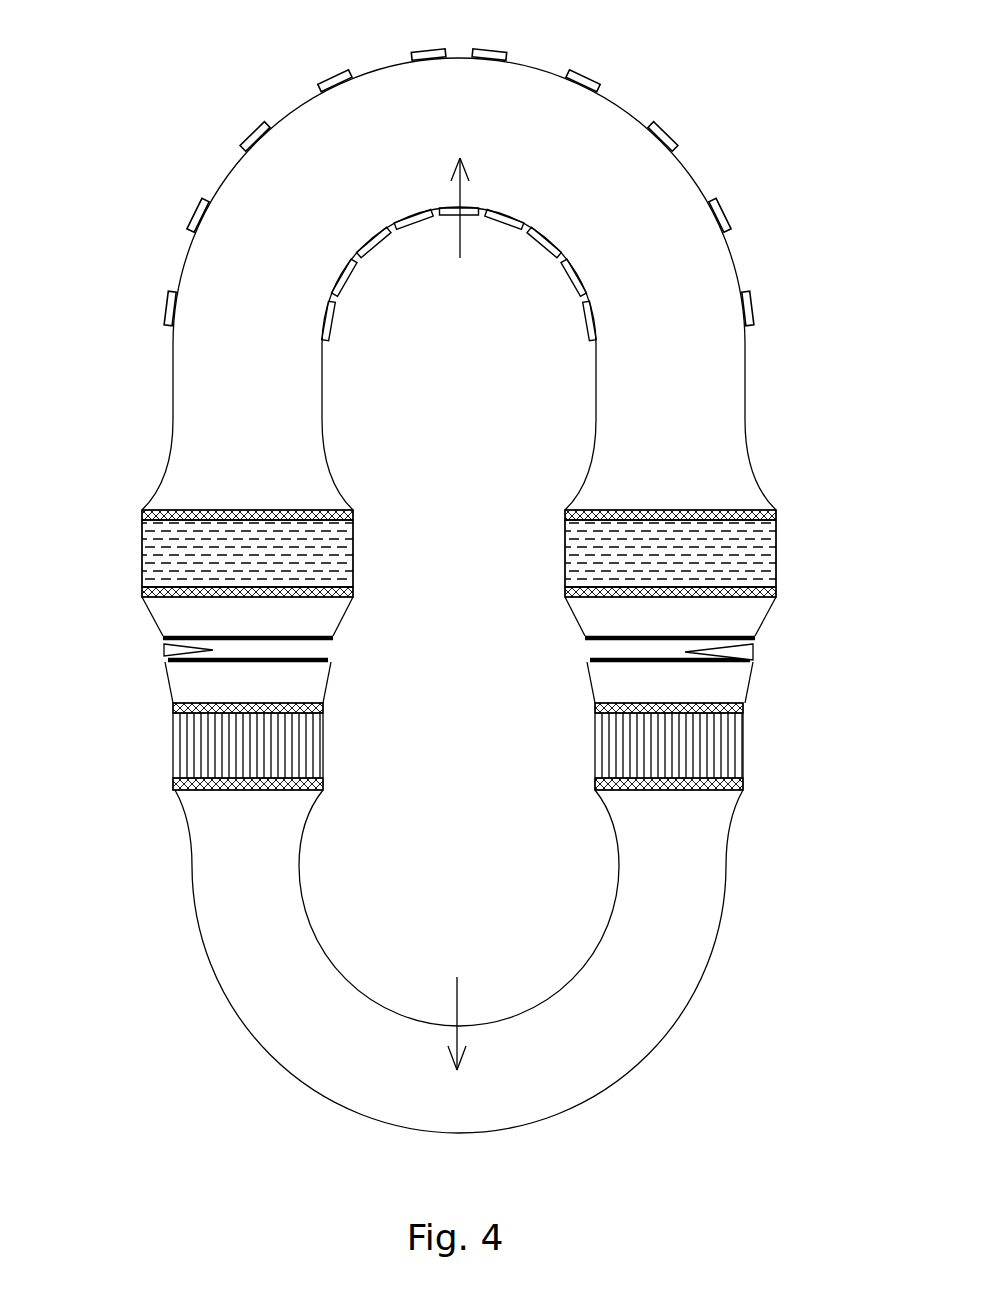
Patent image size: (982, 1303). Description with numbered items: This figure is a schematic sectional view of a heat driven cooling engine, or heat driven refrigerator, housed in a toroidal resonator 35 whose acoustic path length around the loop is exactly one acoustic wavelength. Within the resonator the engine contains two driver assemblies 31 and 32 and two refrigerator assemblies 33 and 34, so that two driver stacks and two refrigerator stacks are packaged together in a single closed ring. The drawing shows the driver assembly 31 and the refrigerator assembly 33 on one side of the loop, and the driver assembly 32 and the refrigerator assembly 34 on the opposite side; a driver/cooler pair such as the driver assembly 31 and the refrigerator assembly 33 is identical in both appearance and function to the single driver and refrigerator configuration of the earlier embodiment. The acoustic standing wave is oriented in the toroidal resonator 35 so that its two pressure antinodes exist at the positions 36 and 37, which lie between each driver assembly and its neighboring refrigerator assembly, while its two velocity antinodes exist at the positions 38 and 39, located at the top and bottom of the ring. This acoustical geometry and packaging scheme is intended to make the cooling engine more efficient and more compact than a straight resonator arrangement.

The driver assembly 31 is at (142, 530).
The driver assembly 32 is at (777, 538).
The refrigerator assembly 33 is at (175, 765).
The refrigerator assembly 34 is at (745, 765).
The toroidal resonator 35 is at (715, 1014).
The pressure antinode position 36 is at (204, 650).
The pressure antinode position 37 is at (700, 652).
The velocity antinode position 38 is at (453, 231).
The velocity antinode position 39 is at (457, 1004).